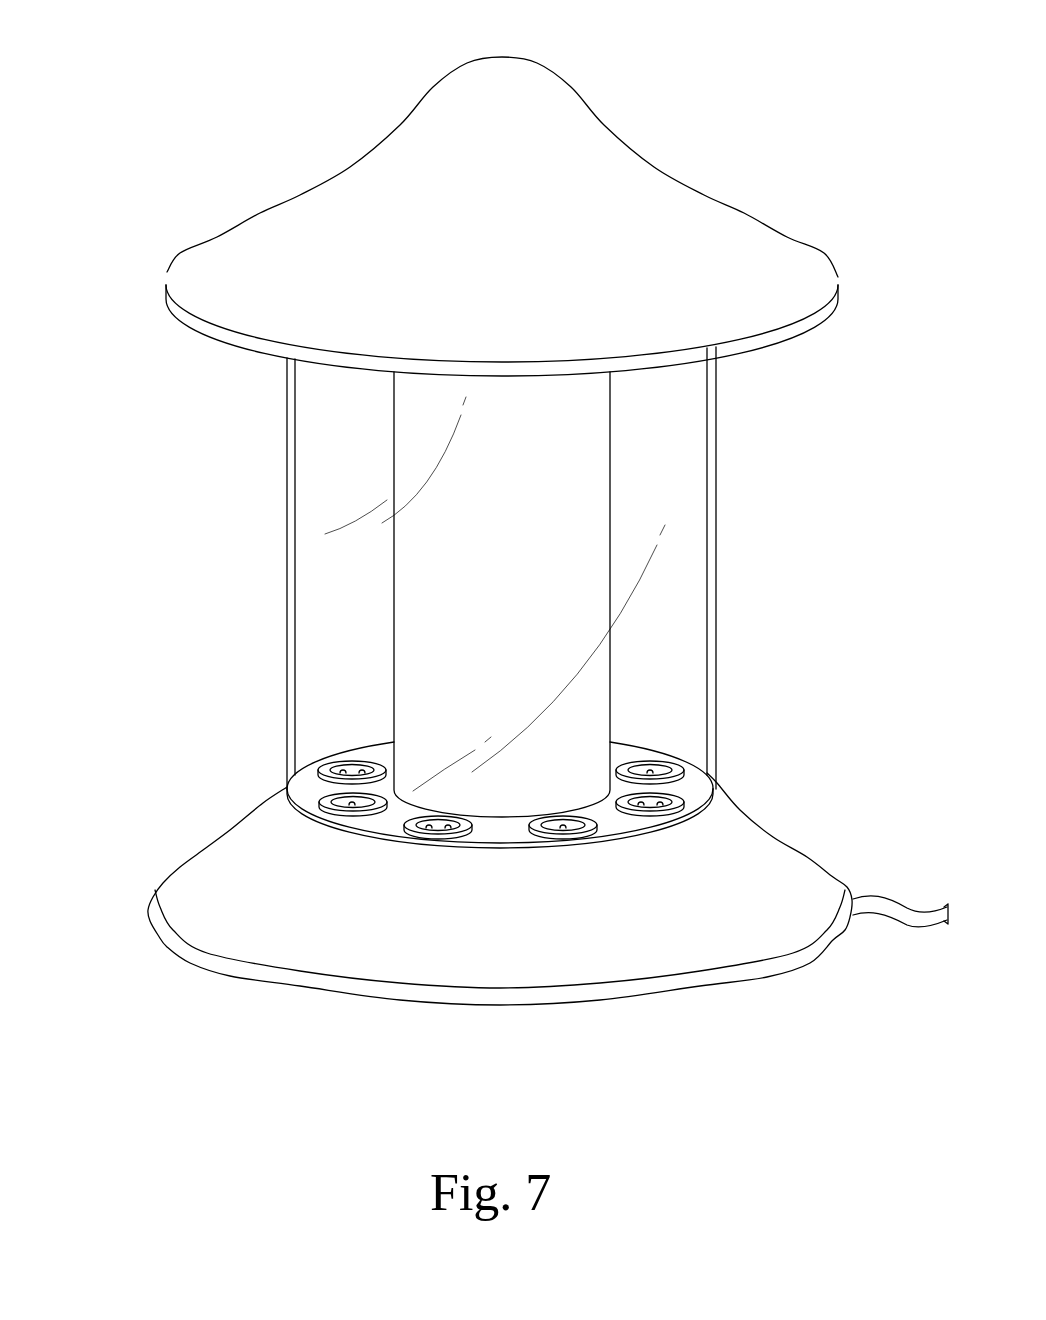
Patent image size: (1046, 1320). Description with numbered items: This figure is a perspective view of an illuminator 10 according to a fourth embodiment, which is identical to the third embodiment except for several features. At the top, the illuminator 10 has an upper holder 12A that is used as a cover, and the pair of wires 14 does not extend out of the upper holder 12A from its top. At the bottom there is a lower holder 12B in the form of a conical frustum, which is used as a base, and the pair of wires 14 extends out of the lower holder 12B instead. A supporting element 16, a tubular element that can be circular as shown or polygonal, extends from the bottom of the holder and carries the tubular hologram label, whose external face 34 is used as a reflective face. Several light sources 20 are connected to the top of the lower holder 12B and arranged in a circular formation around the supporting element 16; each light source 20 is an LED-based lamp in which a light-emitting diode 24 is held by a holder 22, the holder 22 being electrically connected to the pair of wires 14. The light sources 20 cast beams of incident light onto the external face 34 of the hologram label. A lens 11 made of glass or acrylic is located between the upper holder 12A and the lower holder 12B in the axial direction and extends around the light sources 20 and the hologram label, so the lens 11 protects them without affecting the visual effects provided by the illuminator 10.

The illuminator 10 is at (249, 172).
The lens 11 is at (298, 465).
The upper holder 12A is at (688, 212).
The lower holder 12B is at (210, 870).
The pair of wires 14 is at (893, 918).
The supporting element 16 is at (625, 473).
The light source 20 is at (212, 571).
The holder 22 is at (318, 793).
The light-emitting diode 24 is at (343, 773).
The external face 34 is at (407, 608).